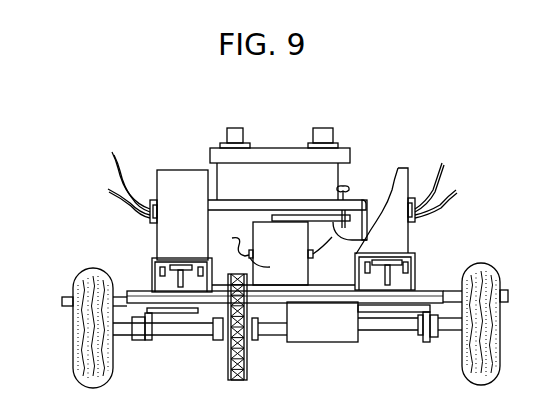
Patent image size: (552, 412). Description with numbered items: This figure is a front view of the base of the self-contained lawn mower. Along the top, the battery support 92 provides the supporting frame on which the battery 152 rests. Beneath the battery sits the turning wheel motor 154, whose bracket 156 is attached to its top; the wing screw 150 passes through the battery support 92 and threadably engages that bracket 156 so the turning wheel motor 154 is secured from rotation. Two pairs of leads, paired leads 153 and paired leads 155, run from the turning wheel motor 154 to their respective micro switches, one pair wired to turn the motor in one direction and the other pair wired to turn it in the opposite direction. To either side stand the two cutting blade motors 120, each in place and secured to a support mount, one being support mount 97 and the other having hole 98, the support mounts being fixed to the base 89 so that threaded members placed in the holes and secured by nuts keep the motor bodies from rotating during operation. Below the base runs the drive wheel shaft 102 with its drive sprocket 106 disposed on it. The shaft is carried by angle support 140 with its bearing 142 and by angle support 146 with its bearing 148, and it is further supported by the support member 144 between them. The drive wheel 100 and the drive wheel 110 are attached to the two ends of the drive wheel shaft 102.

The base 89 is at (530, 273).
The battery support 92 is at (363, 200).
The support mount 97 is at (455, 255).
The hole 98 is at (150, 278).
The drive wheel 100 is at (72, 358).
The drive wheel shaft 102 is at (193, 337).
The drive sprocket 106 is at (248, 360).
The drive wheel 110 is at (498, 345).
The cutting blade motor 120 is at (193, 170).
The angle support 140 is at (142, 342).
The bearing 142 is at (133, 343).
The support member 144 is at (310, 343).
The angle support 146 is at (432, 340).
The bearing 148 is at (425, 337).
The wing screw 150 is at (333, 190).
The battery 152 is at (280, 148).
The paired leads 153 is at (332, 246).
The turning wheel motor 154 is at (253, 236).
The paired leads 155 is at (282, 253).
The bracket 156 is at (367, 238).